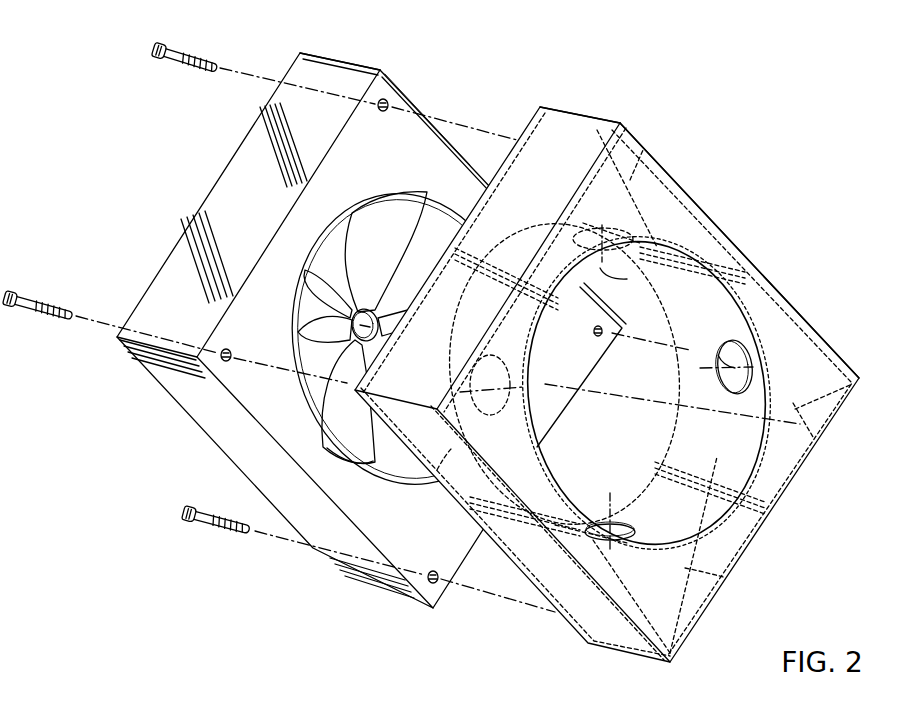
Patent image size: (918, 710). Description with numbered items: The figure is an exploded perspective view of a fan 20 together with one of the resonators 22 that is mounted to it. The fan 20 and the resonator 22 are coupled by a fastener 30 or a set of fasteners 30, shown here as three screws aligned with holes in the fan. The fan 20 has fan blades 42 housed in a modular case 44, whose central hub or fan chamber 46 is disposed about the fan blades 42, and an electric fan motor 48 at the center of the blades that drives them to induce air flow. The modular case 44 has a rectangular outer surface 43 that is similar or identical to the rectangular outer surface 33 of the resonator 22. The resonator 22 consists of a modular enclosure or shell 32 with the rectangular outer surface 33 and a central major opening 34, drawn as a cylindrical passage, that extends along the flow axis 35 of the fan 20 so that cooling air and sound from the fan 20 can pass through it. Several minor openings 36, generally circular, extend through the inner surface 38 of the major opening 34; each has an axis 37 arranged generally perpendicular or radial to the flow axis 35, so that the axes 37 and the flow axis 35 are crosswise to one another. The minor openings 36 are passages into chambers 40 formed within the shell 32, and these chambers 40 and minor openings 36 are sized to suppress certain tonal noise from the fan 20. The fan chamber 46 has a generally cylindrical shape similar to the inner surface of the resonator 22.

The fan 20 is at (183, 102).
The resonator 22 is at (560, 103).
The fastener 30 is at (178, 52).
The shell 32 is at (637, 137).
The rectangular outer surface 33 is at (580, 135).
The major opening 34 is at (657, 318).
The flow axis 35 is at (610, 385).
The minor openings 36 is at (627, 223).
The axes 37 is at (602, 278).
The inner surface 38 is at (727, 463).
The chambers 40 is at (650, 158).
The fan blades 42 is at (380, 235).
The rectangular outer surface 43 is at (345, 62).
The modular case 44 is at (447, 165).
The fan chamber 46 is at (393, 212).
The electric fan motor 48 is at (350, 332).